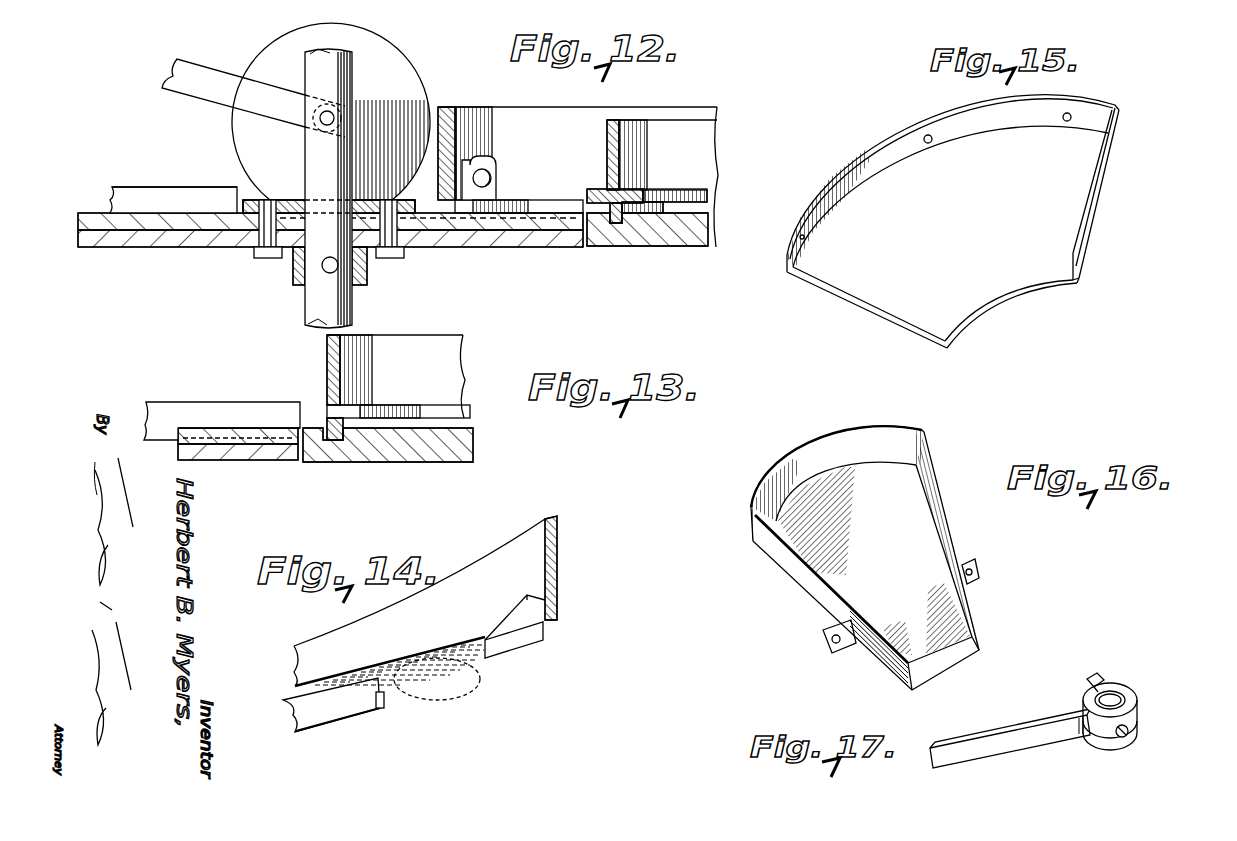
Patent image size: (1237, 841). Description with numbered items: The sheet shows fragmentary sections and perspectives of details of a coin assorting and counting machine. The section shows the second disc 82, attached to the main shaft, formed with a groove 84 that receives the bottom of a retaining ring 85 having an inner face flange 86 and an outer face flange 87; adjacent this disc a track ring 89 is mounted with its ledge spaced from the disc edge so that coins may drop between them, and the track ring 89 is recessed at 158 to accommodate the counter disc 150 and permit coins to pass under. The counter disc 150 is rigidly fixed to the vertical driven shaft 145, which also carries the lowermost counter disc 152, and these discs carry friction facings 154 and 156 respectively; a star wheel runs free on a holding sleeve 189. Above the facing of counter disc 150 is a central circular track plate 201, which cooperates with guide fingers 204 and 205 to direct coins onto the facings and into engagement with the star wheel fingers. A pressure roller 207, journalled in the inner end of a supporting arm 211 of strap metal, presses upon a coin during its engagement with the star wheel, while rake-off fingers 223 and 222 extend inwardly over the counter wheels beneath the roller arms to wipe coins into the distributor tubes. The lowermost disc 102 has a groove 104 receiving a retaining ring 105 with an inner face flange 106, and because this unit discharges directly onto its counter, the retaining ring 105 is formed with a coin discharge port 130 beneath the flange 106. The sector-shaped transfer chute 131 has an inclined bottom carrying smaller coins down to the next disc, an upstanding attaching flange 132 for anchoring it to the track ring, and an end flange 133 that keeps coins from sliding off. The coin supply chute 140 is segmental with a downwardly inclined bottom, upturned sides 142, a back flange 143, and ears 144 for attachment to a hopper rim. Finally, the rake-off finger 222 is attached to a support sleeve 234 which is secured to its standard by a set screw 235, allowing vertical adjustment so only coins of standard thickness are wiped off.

In FIG. 12, the supporting arm 211 is at (245, 70).
In FIG. 12, the vertical driven shaft 145 is at (310, 70).
In FIG. 12, the pressure roller 207 is at (403, 64).
In FIG. 12, the track ring 89 is at (533, 109).
In FIG. 12, the retaining ring 85 is at (678, 127).
In FIG. 12, the rake-off finger 223 is at (192, 178).
In FIG. 12, the friction facing 154 is at (173, 201).
In FIG. 12, the track plate 201 is at (293, 197).
In FIG. 12, the recess 158 is at (440, 205).
In FIG. 12, the guide finger 204 is at (537, 196).
In FIG. 12, the outer face flange 87 is at (598, 189).
In FIG. 12, the inner face flange 86 is at (643, 193).
In FIG. 12, the counter disc 150 is at (164, 243).
In FIG. 12, the holding sleeve 189 is at (297, 274).
In FIG. 12, the groove 84 is at (610, 226).
In FIG. 12, the second disc 82 is at (701, 238).
In FIG. 13, the retaining ring 105 is at (457, 353).
In FIG. 14, the retaining ring 105 is at (503, 556).
In FIG. 13, the inner face flange 106 is at (363, 406).
In FIG. 14, the inner face flange 106 is at (478, 622).
In FIG. 13, the guide finger 205 is at (253, 403).
In FIG. 13, the friction facing 156 is at (253, 431).
In FIG. 13, the counter disc 152 is at (240, 458).
In FIG. 13, the groove 104 is at (330, 443).
In FIG. 13, the lowermost disc 102 is at (423, 457).
In FIG. 14, the coin discharge port 130 is at (393, 699).
In FIG. 15, the attaching flange 132 is at (866, 149).
In FIG. 15, the end flange 133 is at (1082, 207).
In FIG. 15, the transfer chute 131 is at (863, 303).
In FIG. 16, the back flange 143 is at (805, 453).
In FIG. 16, the upturned sides 142 is at (957, 528).
In FIG. 16, the coin supply chute 140 is at (930, 562).
In FIG. 16, the ears 144 is at (833, 651).
In FIG. 17, the set screw 235 is at (1097, 688).
In FIG. 17, the support sleeve 234 is at (1130, 694).
In FIG. 17, the rake-off finger 222 is at (987, 736).